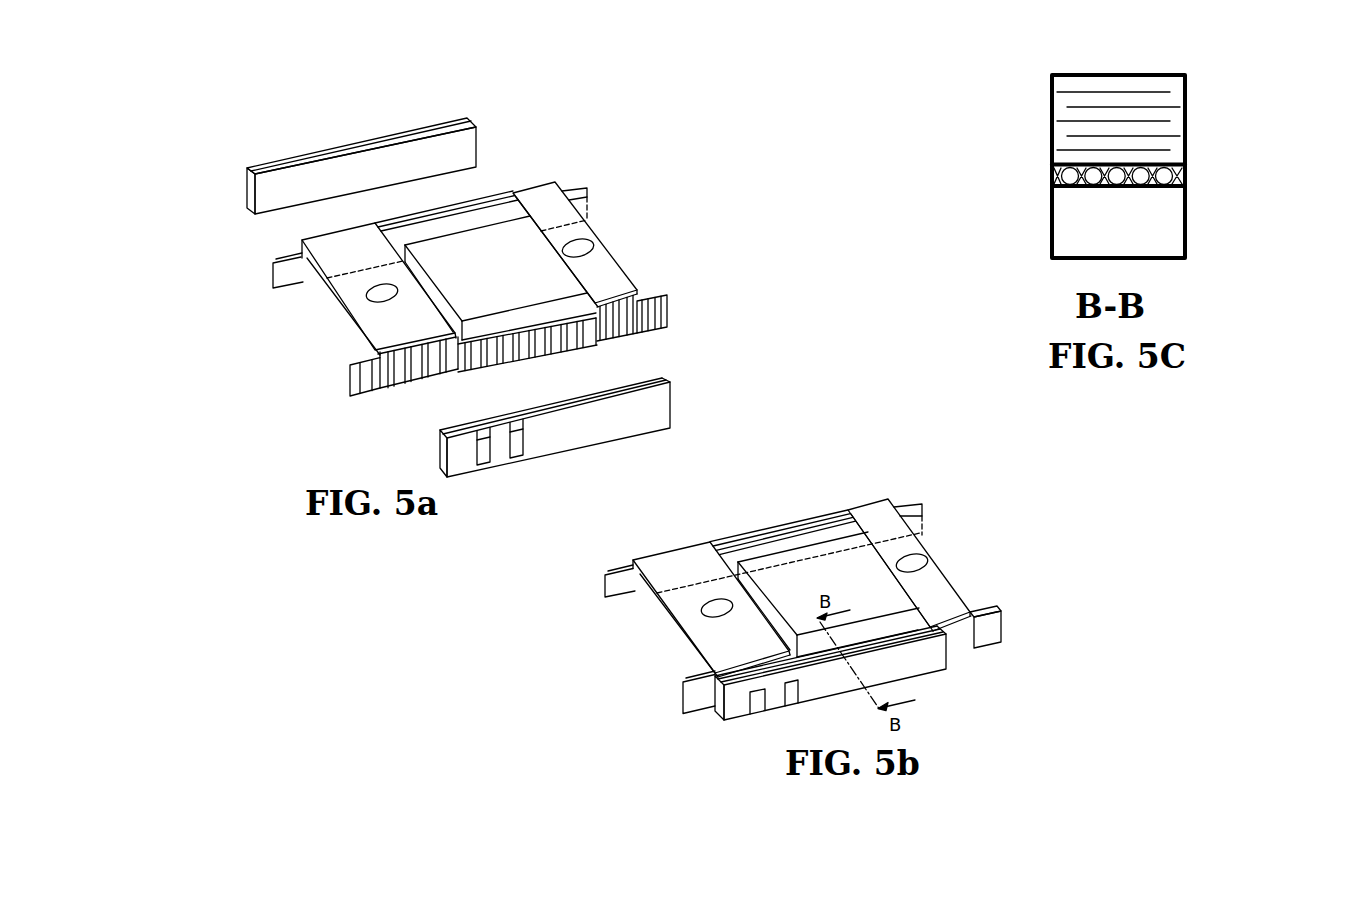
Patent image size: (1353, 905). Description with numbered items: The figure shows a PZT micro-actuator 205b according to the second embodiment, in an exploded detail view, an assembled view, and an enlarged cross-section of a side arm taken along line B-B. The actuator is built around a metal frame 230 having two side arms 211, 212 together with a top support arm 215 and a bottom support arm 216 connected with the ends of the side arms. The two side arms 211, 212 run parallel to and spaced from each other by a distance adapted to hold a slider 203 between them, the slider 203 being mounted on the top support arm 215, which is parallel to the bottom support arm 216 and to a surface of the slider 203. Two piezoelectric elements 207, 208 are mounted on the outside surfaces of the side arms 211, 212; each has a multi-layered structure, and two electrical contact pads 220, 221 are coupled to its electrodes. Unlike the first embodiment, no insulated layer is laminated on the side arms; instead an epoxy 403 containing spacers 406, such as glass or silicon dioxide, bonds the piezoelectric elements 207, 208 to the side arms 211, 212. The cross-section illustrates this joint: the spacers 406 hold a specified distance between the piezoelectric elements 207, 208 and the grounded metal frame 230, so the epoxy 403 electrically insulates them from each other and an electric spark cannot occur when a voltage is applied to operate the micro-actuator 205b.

In FIG. 5a, the PZT micro-actuator 205b is at (249, 60).
In FIG. 5a, the piezoelectric element 207 is at (280, 168).
In FIG. 5b, the piezoelectric element 207 is at (767, 530).
In FIG. 5c, the piezoelectric element 207 is at (1040, 75).
In FIG. 5a, the piezoelectric element 208 is at (657, 408).
In FIG. 5b, the piezoelectric element 208 is at (890, 678).
In FIG. 5a, the side arm 211 is at (274, 262).
In FIG. 5b, the side arm 211 is at (917, 507).
In FIG. 5c, the side arm 211 is at (1158, 216).
In FIG. 5a, the side arm 212 is at (661, 296).
In FIG. 5b, the side arm 212 is at (994, 609).
In FIG. 5a, the top support arm 215 is at (553, 212).
In FIG. 5b, the top support arm 215 is at (887, 527).
In FIG. 5a, the bottom support arm 216 is at (355, 287).
In FIG. 5b, the bottom support arm 216 is at (688, 602).
In FIG. 5a, the slider 203 is at (622, 250).
In FIG. 5b, the slider 203 is at (955, 563).
In FIG. 5a, the metal frame 230 is at (497, 205).
In FIG. 5b, the metal frame 230 is at (828, 526).
In FIG. 5a, the epoxy 403 is at (299, 257).
In FIG. 5c, the epoxy 403 is at (1185, 177).
In FIG. 5c, the spacer 406 is at (1178, 169).
In FIG. 5a, the electrical contact pad 220 is at (483, 460).
In FIG. 5a, the electrical contact pad 221 is at (513, 452).